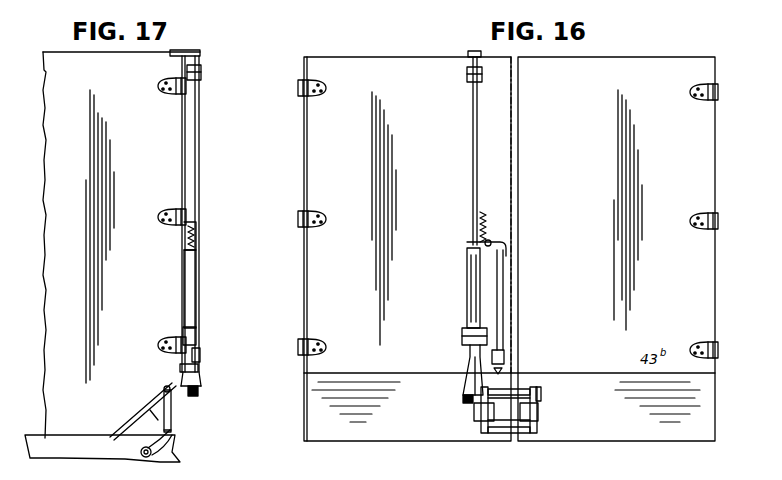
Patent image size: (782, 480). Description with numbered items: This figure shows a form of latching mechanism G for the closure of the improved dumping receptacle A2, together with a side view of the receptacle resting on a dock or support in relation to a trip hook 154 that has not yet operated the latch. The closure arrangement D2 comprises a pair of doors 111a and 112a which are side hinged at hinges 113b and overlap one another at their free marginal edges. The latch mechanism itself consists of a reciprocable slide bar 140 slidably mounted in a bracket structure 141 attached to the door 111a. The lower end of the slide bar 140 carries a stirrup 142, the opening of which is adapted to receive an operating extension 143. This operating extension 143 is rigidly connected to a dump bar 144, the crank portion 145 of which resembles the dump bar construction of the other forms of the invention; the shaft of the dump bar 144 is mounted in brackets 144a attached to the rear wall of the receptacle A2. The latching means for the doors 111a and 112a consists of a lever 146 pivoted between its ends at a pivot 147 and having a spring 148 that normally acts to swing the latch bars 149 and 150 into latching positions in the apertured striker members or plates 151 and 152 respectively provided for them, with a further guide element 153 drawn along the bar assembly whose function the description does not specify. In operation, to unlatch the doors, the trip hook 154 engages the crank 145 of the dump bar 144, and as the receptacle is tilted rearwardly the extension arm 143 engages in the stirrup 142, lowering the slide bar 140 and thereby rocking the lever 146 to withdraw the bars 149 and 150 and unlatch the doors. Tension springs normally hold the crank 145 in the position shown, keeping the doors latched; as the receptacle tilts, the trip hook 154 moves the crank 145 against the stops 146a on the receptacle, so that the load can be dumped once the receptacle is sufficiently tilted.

In FIG. 17, the receptacle A2 is at (85, 317).
In FIG. 16, the double door assembly D2 is at (307, 272).
In FIG. 16, the door 111a is at (396, 72).
In FIG. 16, the door 112a is at (643, 70).
In FIG. 16, the hinges 113b is at (726, 354).
In FIG. 17, the slide bar 140 is at (186, 300).
In FIG. 16, the slide bar 140 is at (467, 286).
In FIG. 17, the bracket structure 141 is at (197, 342).
In FIG. 16, the bracket structure 141 is at (462, 340).
In FIG. 17, the stirrup 142 is at (205, 391).
In FIG. 16, the stirrup 142 is at (465, 385).
In FIG. 17, the operating extension 143 is at (204, 385).
In FIG. 16, the operating extension 143 is at (468, 370).
In FIG. 17, the dump bar 144 is at (164, 389).
In FIG. 16, the dump bar 144 is at (518, 390).
In FIG. 16, the brackets 144a is at (540, 392).
In FIG. 17, the crank portion 145 is at (180, 410).
In FIG. 16, the crank portion 145 is at (512, 434).
In FIG. 16, the lever 146 is at (492, 247).
In FIG. 17, the stops 146a is at (150, 405).
In FIG. 16, the stops 146a is at (540, 414).
In FIG. 17, the pivot 147 is at (197, 238).
In FIG. 16, the pivot 147 is at (490, 240).
In FIG. 17, the spring 148 is at (181, 238).
In FIG. 16, the spring 148 is at (487, 240).
In FIG. 16, the bar 149 is at (504, 290).
In FIG. 17, the bar 150 is at (195, 170).
In FIG. 16, the bar 150 is at (473, 180).
In FIG. 17, the striker member 151 is at (200, 378).
In FIG. 16, the striker member 151 is at (520, 382).
In FIG. 17, the striker member 152 is at (175, 56).
In FIG. 16, the striker member 152 is at (467, 58).
In FIG. 16, the stop block 153 is at (468, 82).
In FIG. 17, the trip hook 154 is at (170, 447).